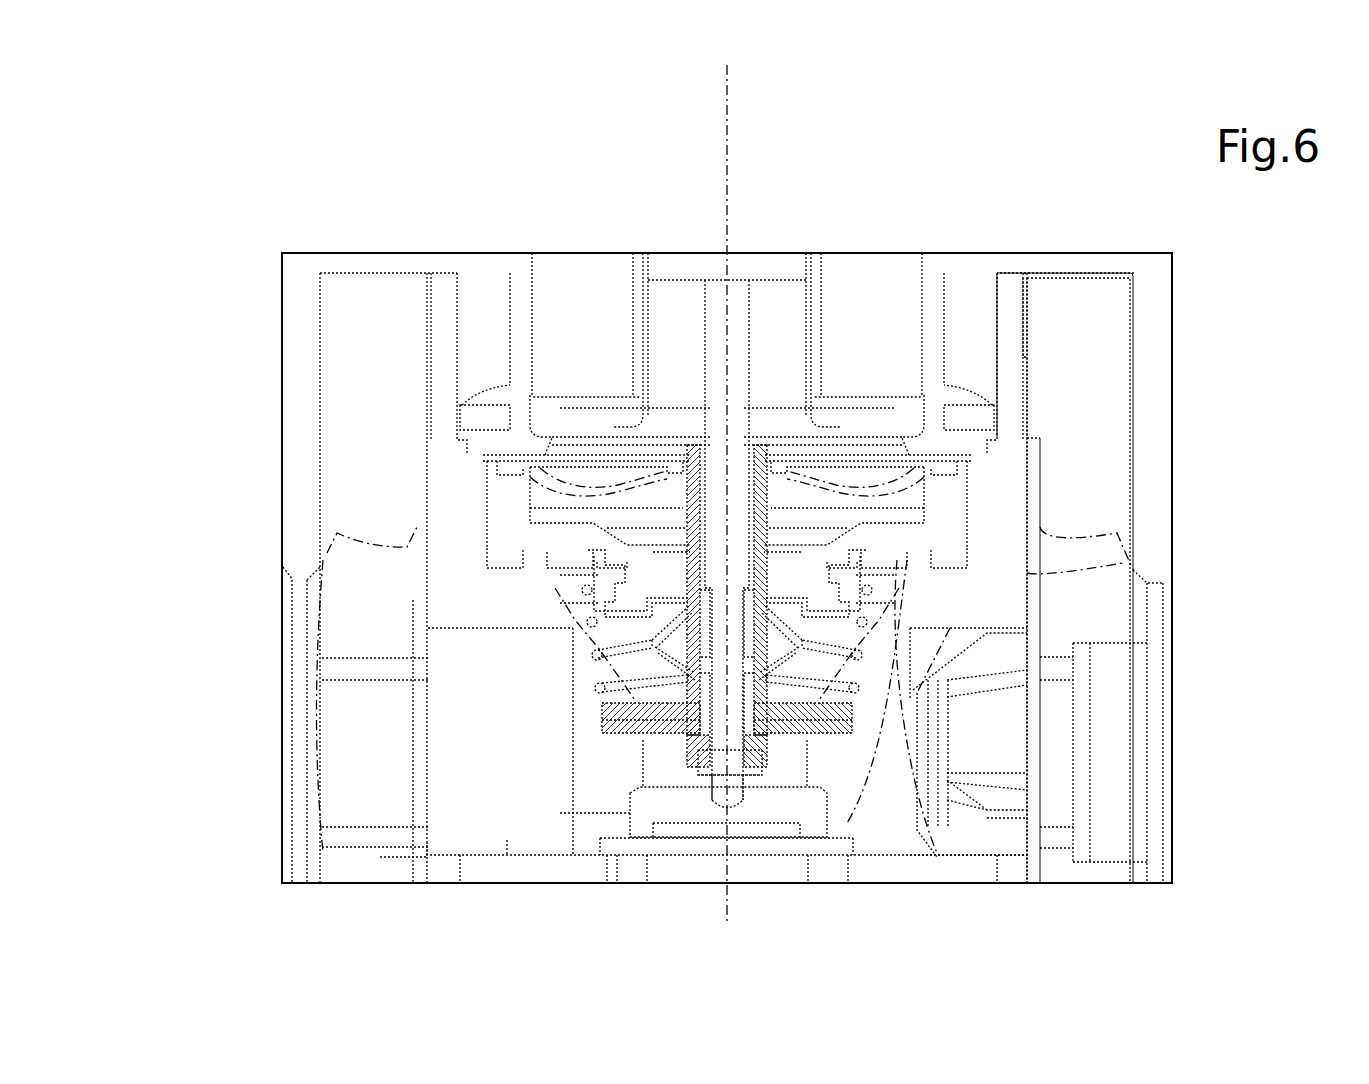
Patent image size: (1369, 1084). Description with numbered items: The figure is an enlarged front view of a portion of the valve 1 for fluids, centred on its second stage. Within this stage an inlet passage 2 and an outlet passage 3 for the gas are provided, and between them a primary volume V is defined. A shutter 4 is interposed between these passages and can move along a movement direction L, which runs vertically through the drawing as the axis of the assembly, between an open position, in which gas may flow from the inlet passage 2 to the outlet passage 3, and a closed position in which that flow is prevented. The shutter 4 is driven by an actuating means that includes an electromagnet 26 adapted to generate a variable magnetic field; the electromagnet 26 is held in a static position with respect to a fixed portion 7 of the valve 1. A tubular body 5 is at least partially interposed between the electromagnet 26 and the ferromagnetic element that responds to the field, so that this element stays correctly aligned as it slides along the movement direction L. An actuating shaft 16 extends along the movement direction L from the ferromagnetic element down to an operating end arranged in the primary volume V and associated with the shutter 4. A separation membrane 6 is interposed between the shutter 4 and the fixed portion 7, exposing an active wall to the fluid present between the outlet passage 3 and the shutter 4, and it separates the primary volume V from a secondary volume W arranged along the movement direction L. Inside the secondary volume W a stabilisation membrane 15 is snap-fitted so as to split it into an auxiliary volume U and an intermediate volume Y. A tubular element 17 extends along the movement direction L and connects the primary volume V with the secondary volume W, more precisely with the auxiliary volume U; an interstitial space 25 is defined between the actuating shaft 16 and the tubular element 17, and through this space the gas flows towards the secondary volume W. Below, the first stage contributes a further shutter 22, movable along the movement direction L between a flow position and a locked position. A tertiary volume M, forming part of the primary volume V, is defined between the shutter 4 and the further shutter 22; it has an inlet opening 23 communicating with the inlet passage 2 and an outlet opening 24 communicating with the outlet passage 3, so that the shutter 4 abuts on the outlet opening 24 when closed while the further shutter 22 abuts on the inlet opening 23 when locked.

The valve 1 is at (181, 163).
The inlet passage 2 is at (1210, 674).
The outlet passage 3 is at (198, 678).
The shutter 4 is at (592, 724).
The tubular body 5 is at (643, 333).
The separation membrane 6 is at (793, 651).
The fixed portion 7 is at (517, 527).
The stabilisation membrane 15 is at (863, 497).
The actuating shaft 16 is at (757, 432).
The tubular element 17 is at (690, 607).
The further shutter 22 is at (685, 868).
The inlet opening 23 is at (860, 742).
The outlet opening 24 is at (512, 738).
The interstitial space 25 is at (747, 720).
The electromagnet 26 is at (567, 332).
The secondary volume W is at (541, 418).
The movement direction L is at (727, 187).
The auxiliary volume U is at (840, 485).
The intermediate volume Y is at (774, 597).
The primary volume V is at (588, 809).
The tertiary volume M is at (790, 773).